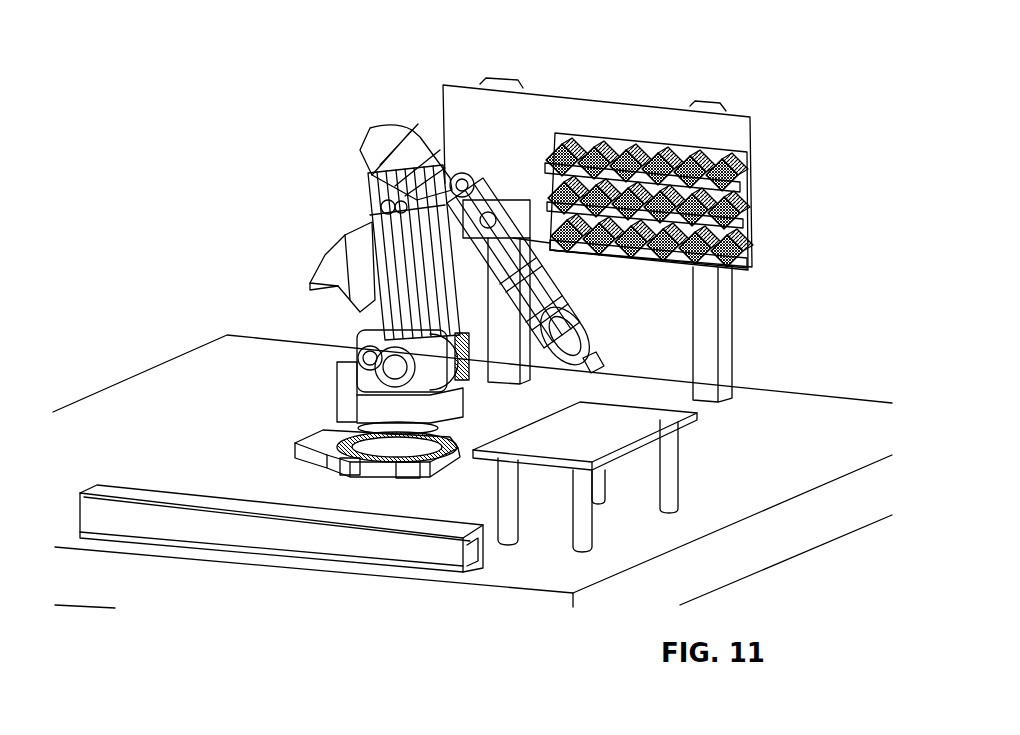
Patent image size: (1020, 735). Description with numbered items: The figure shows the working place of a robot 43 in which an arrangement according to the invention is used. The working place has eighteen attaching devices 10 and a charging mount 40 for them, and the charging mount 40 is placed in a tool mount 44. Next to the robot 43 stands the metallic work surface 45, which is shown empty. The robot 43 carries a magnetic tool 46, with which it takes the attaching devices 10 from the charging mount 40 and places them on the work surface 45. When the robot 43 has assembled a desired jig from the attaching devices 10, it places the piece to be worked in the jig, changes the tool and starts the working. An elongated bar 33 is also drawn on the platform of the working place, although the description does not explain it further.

The attaching device 10 is at (627, 150).
The bar 33 is at (404, 550).
The charging mount 40 is at (713, 157).
The robot 43 is at (343, 257).
The tool mount 44 is at (735, 125).
The metallic work surface 45 is at (630, 428).
The magnetic tool 46 is at (598, 363).